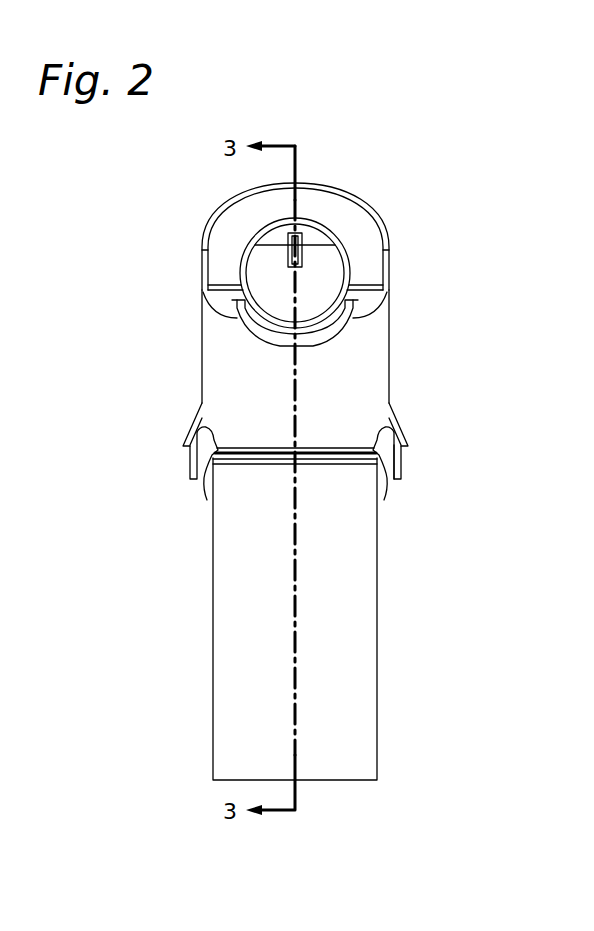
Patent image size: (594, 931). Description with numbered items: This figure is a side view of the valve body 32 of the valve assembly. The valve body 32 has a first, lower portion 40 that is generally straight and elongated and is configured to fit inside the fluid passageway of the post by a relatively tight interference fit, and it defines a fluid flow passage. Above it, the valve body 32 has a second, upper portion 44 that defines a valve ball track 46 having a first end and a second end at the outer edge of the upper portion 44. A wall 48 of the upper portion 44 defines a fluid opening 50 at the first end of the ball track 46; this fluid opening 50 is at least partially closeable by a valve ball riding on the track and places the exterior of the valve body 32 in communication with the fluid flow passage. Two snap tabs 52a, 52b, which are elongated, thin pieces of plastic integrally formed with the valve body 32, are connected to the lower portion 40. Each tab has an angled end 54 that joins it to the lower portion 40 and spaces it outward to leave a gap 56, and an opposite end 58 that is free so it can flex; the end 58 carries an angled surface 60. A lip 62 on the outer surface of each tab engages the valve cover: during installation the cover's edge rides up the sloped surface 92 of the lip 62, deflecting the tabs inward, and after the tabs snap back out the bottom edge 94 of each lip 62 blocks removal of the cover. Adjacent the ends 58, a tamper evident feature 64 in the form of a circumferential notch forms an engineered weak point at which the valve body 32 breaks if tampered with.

The valve body 32 is at (483, 368).
The first, lower portion 40 is at (363, 652).
The second, upper portion 44 is at (383, 217).
The valve ball track 46 is at (263, 333).
The wall 48 is at (322, 205).
The fluid opening 50 is at (260, 273).
The snap tab 52a is at (412, 425).
The snap tab 52b is at (178, 432).
The angled end 54 is at (394, 418).
The gap 56 is at (383, 457).
The opposite end 58 is at (403, 467).
The angled surface 60 is at (393, 468).
The lip 62 is at (410, 445).
The tamper evident feature 64 is at (203, 495).
The sloped surface 92 is at (190, 425).
The bottom edge 94 is at (187, 448).